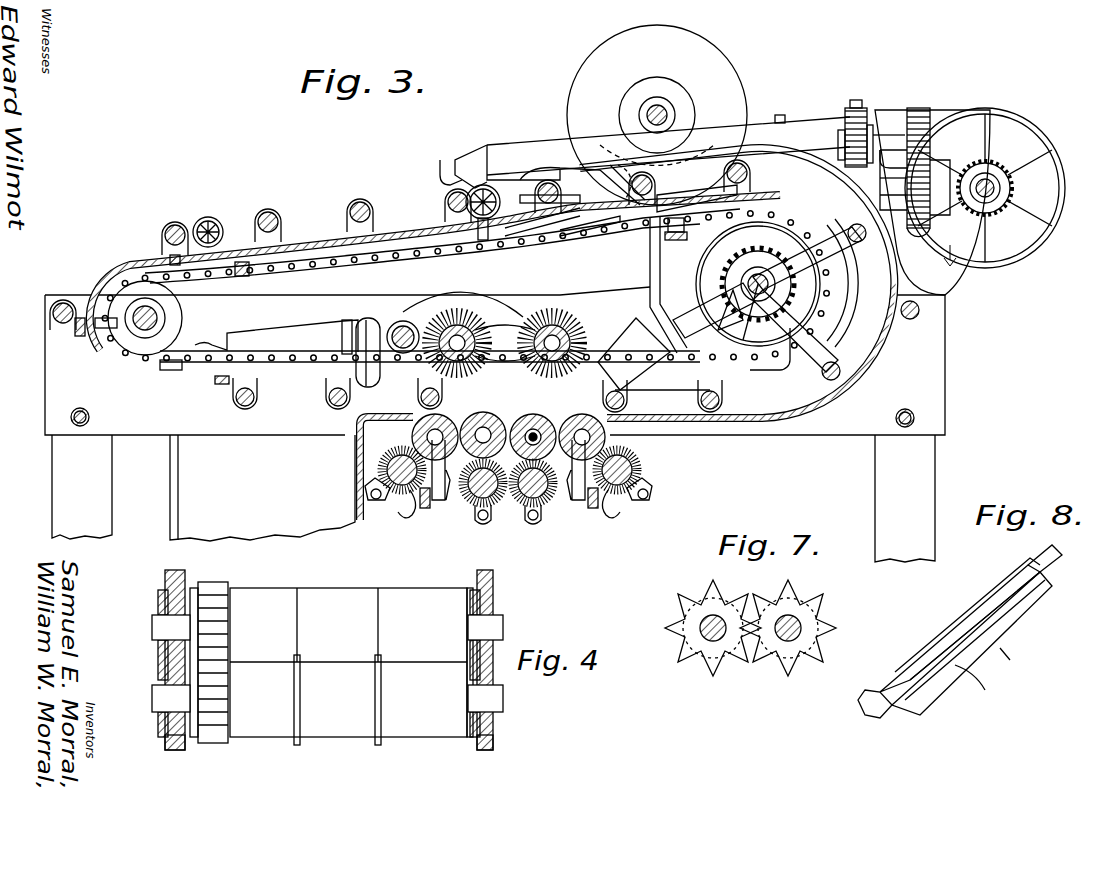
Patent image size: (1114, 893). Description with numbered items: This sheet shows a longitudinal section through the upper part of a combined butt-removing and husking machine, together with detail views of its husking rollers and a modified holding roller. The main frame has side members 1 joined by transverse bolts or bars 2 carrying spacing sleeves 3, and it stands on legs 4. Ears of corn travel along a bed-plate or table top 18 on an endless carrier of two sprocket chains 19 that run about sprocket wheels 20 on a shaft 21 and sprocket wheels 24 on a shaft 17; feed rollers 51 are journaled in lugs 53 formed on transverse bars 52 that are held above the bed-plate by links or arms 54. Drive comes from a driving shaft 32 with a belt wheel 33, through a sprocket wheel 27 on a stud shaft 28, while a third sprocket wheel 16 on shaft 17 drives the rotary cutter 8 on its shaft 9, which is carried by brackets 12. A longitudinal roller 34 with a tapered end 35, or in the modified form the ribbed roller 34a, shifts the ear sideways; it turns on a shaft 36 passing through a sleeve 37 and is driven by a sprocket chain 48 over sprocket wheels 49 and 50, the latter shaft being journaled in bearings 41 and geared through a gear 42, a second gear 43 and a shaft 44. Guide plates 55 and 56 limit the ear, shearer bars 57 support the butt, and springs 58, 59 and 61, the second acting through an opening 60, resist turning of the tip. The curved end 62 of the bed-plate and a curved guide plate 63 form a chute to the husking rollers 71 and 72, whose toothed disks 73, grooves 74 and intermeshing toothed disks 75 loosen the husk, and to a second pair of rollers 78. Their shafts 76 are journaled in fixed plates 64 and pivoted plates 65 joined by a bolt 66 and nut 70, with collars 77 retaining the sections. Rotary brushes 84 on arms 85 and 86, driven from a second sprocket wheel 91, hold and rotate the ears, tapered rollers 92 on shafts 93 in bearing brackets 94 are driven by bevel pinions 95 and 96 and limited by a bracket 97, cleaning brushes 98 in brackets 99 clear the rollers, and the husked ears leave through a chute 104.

In FIG. 3, the side members 1 is at (282, 433).
In FIG. 3, the transverse bolts or bars 2 is at (86, 410).
In FIG. 3, the spacing sleeves 3 is at (89, 419).
In FIG. 3, the standards or legs 4 is at (122, 470).
In FIG. 3, the chute 104 is at (178, 483).
In FIG. 3, the rotary cutter 8 is at (710, 60).
In FIG. 3, the shaft 9 is at (667, 108).
In FIG. 3, the brackets 12 is at (950, 280).
In FIG. 3, the third sprocket wheel 16 is at (940, 245).
In FIG. 3, the shaft 17 is at (771, 295).
In FIG. 3, the bed-plate or table top 18 is at (320, 242).
In FIG. 3, the sprocket chains 19 is at (330, 256).
In FIG. 3, the sprocket wheels 20 is at (172, 312).
In FIG. 3, the shaft 21 is at (157, 318).
In FIG. 3, the sprocket wheels 24 is at (696, 258).
In FIG. 3, the sprocket wheel 27 is at (1012, 205).
In FIG. 3, the stud shaft 28 is at (400, 321).
In FIG. 3, the driving shaft 32 is at (996, 178).
In FIG. 3, the belt wheel 33 is at (1030, 122).
In FIG. 3, the roller 34 is at (505, 143).
In FIG. 8, the roller 34 is at (975, 583).
In FIG. 8, the roller spline 34a is at (1000, 665).
In FIG. 3, the tapered forward end 35 is at (462, 158).
In FIG. 3, the shaft 36 is at (862, 110).
In FIG. 8, the shaft 36 is at (1055, 560).
In FIG. 3, the sleeve 37 is at (780, 130).
In FIG. 3, the bearings 41 is at (890, 128).
In FIG. 3, the gear 42 is at (925, 108).
In FIG. 3, the second gear 43 is at (893, 182).
In FIG. 3, the shaft 44 is at (893, 186).
In FIG. 3, the sprocket chain 48 is at (870, 125).
In FIG. 3, the sprocket wheel 49 is at (842, 130).
In FIG. 3, the sprocket wheel 50 is at (892, 168).
In FIG. 3, the rollers 51 is at (68, 300).
In FIG. 3, the transverse bars 52 is at (90, 312).
In FIG. 3, the lugs 53 is at (430, 406).
In FIG. 3, the links or arms 54 is at (100, 325).
In FIG. 3, the plate 55 is at (440, 165).
In FIG. 3, the lower plate 56 is at (530, 215).
In FIG. 3, the shearer bars 57 is at (680, 188).
In FIG. 3, the spring 58 is at (552, 172).
In FIG. 3, the second spring 59 is at (600, 225).
In FIG. 3, the opening 60 is at (578, 220).
In FIG. 3, the spring 61 is at (615, 165).
In FIG. 3, the curved end 62 is at (812, 240).
In FIG. 3, the curved guide plate 63 is at (875, 365).
In FIG. 3, the plates 64 is at (500, 505).
In FIG. 4, the plates 64 is at (165, 742).
In FIG. 3, the plates 65 is at (508, 488).
In FIG. 4, the plates 65 is at (170, 575).
In FIG. 3, the bolt 66 is at (507, 517).
In FIG. 3, the nut 70 is at (425, 508).
In FIG. 3, the roller 71 is at (483, 412).
In FIG. 4, the roller 71 is at (355, 588).
In FIG. 7, the roller 71 is at (695, 660).
In FIG. 3, the roller 72 is at (540, 414).
In FIG. 4, the roller 72 is at (358, 722).
In FIG. 7, the roller 72 is at (830, 628).
In FIG. 3, the toothed disks or star wheels 73 is at (578, 414).
In FIG. 4, the toothed disks or star wheels 73 is at (382, 722).
In FIG. 4, the grooves 74 is at (297, 588).
In FIG. 4, the intermeshing toothed disks 75 is at (222, 582).
In FIG. 7, the intermeshing toothed disks 75 is at (748, 594).
In FIG. 3, the shafts 76 is at (530, 420).
In FIG. 4, the shafts 76 is at (503, 627).
In FIG. 7, the shafts 76 is at (702, 635).
In FIG. 4, the collars 77 is at (194, 588).
In FIG. 3, the second pair of rollers 78 is at (440, 414).
In FIG. 3, the rotary brushes 84 is at (457, 310).
In FIG. 3, the parallel arms 85 is at (430, 300).
In FIG. 3, the second pair of arms 86 is at (505, 330).
In FIG. 3, the second sprocket wheel 91 is at (368, 318).
In FIG. 3, the tapered rollers 92 is at (650, 378).
In FIG. 3, the shaft 93 is at (645, 305).
In FIG. 3, the bearing bracket 94 is at (700, 325).
In FIG. 3, the bevel pinion 95 is at (768, 300).
In FIG. 3, the second bevel pinion 96 is at (761, 272).
In FIG. 3, the bracket 97 is at (648, 268).
In FIG. 3, the rotary brushes 98 is at (385, 468).
In FIG. 3, the brackets 99 is at (380, 500).